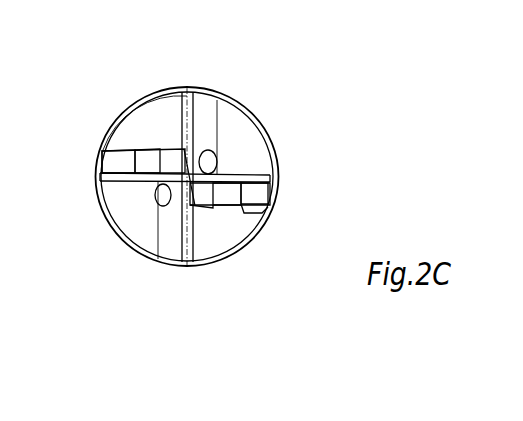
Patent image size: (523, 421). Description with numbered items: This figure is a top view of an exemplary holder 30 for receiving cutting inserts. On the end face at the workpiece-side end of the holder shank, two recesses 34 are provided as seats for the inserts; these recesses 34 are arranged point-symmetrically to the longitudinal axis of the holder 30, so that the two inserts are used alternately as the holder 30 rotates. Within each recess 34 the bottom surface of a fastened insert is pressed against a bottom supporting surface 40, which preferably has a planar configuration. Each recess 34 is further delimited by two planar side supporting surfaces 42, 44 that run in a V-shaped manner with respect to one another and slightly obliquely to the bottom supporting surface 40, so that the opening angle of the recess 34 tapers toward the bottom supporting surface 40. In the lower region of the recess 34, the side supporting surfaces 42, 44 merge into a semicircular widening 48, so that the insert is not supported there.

The holder 30 is at (300, 112).
The recess 34 is at (257, 173).
The bottom supporting surface 40 is at (170, 148).
The side supporting surface 42 is at (113, 160).
The side supporting surface 44 is at (186, 157).
The widening 48 is at (147, 157).